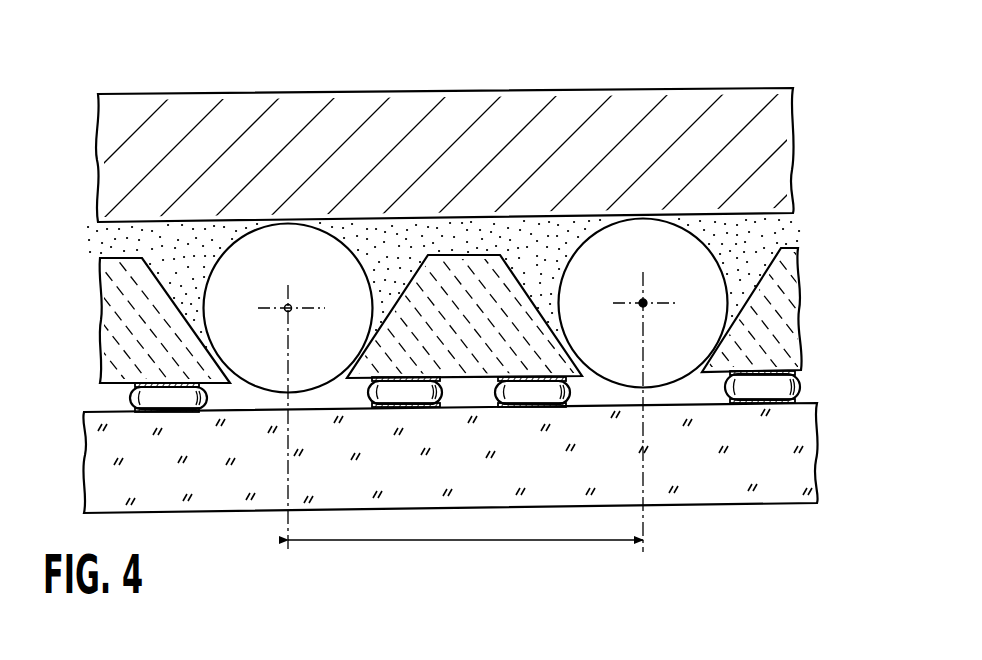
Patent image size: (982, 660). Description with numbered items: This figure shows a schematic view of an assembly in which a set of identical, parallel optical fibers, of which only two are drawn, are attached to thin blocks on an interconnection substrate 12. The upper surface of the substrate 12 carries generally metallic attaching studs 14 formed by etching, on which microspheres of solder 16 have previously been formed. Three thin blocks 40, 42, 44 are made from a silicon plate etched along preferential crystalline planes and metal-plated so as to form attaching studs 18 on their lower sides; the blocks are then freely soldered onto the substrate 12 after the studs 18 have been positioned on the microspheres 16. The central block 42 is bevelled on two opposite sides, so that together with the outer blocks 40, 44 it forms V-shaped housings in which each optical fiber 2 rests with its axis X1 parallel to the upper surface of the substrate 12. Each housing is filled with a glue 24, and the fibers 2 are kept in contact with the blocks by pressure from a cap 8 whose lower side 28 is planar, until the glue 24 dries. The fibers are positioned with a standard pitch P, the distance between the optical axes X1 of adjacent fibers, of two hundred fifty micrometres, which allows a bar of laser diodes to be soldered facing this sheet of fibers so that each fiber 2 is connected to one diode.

The cap 8 is at (735, 88).
The thin block 42 is at (468, 258).
The glue 24 is at (778, 229).
The lower side of the cap 28 is at (112, 235).
The thin block 40 is at (112, 287).
The thin block 44 is at (800, 280).
The attaching studs 18 is at (790, 330).
The microspheres of solder 16 is at (795, 385).
The interconnection substrate 12 is at (90, 412).
The attaching studs 14 is at (788, 405).
The optical fiber 2 is at (257, 394).
The axis of the fiber X1 is at (286, 305).
The pitch P is at (465, 525).